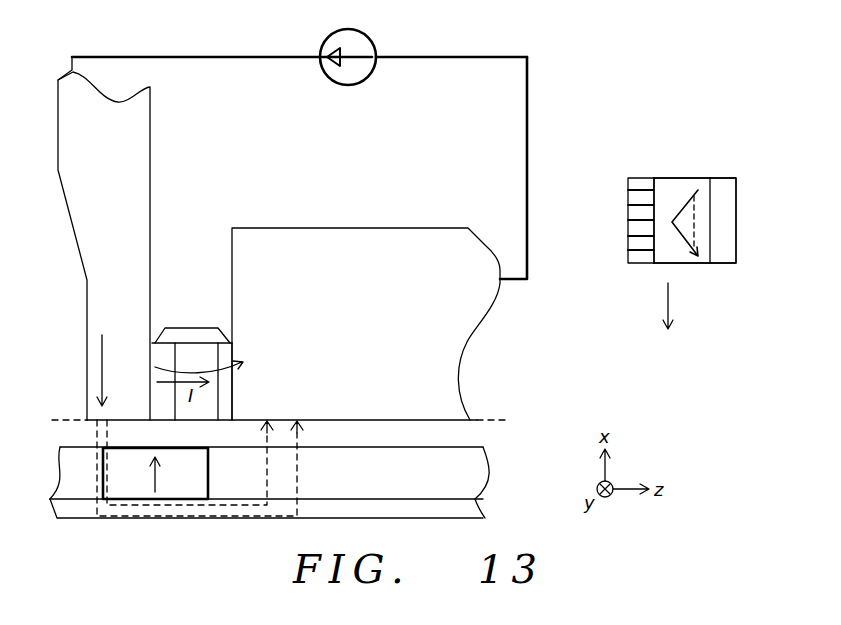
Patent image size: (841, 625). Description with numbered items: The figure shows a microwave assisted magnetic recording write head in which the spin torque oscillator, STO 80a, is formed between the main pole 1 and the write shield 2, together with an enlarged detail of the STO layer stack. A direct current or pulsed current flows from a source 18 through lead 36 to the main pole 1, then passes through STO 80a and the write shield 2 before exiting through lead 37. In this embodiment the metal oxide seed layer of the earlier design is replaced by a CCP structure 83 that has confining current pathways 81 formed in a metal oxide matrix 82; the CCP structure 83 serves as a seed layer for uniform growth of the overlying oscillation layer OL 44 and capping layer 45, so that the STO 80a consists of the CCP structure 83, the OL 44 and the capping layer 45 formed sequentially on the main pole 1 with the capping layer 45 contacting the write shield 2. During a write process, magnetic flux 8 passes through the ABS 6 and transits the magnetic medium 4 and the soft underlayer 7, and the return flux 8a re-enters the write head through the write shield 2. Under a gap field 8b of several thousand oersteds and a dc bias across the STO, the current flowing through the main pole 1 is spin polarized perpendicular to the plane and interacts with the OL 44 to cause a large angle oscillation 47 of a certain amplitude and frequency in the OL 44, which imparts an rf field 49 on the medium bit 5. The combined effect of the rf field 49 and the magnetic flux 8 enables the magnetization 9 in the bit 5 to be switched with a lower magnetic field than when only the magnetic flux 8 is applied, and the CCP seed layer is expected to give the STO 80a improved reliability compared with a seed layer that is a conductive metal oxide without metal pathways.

The main pole 1 is at (82, 228).
The write shield 2 is at (465, 350).
The lead 36 is at (242, 55).
The lead 37 is at (528, 74).
The source 18 is at (376, 40).
The STO 80a is at (202, 315).
The CCP structure 83 is at (166, 411).
The OL 44 is at (202, 411).
The capping layer 45 is at (230, 411).
The large angle oscillation 47 is at (700, 263).
The confining current pathways 81 is at (640, 258).
The metal oxide matrix 82 is at (645, 258).
The rf field 49 is at (681, 306).
The magnetic flux 8 is at (100, 360).
The gap field 8b is at (232, 355).
The flux 8a is at (267, 439).
The ABS 6 is at (500, 416).
The magnetic medium 4 is at (490, 473).
The soft underlayer 7 is at (485, 511).
The medium bit 5 is at (183, 490).
The magnetization 9 is at (150, 472).